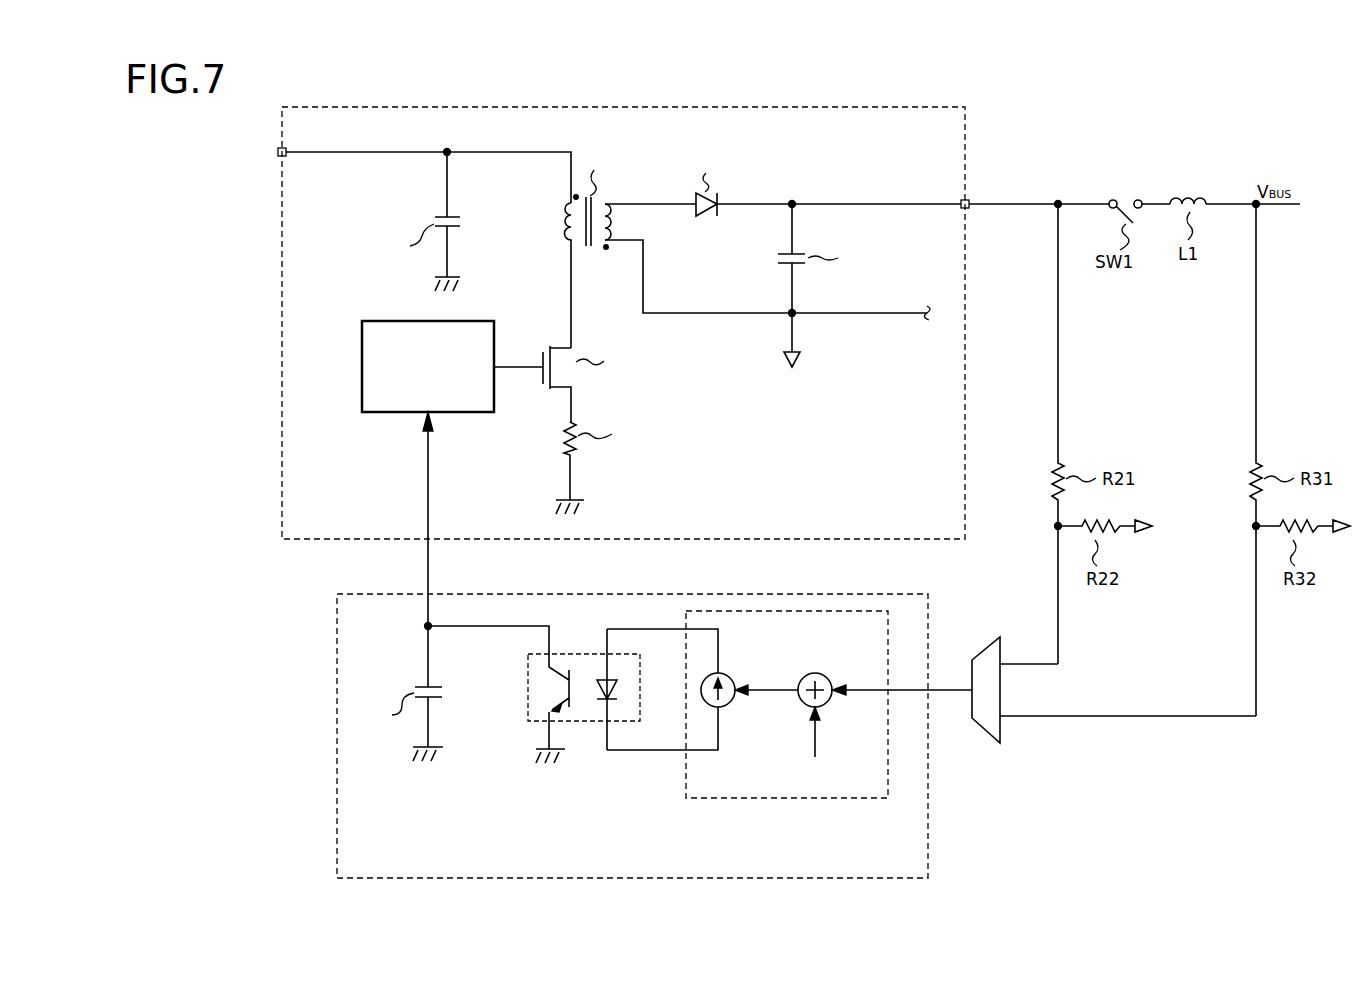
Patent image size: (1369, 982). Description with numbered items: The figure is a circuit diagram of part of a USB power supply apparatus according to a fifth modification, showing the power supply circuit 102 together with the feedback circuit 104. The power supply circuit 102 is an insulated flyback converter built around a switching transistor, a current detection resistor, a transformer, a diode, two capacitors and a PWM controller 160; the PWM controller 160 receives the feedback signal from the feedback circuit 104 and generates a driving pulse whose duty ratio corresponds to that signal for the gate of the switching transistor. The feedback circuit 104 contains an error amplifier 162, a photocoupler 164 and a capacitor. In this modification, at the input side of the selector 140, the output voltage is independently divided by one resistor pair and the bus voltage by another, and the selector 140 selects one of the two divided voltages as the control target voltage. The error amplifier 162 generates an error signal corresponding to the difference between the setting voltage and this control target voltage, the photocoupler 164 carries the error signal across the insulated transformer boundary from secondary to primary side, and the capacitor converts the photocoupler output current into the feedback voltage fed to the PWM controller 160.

The power supply circuit 102 is at (967, 117).
The feedback circuit 104 is at (336, 840).
The selector 140 is at (983, 745).
The PWM controller 160 is at (360, 390).
The error amplifier 162 is at (788, 800).
The photocoupler 164 is at (527, 708).